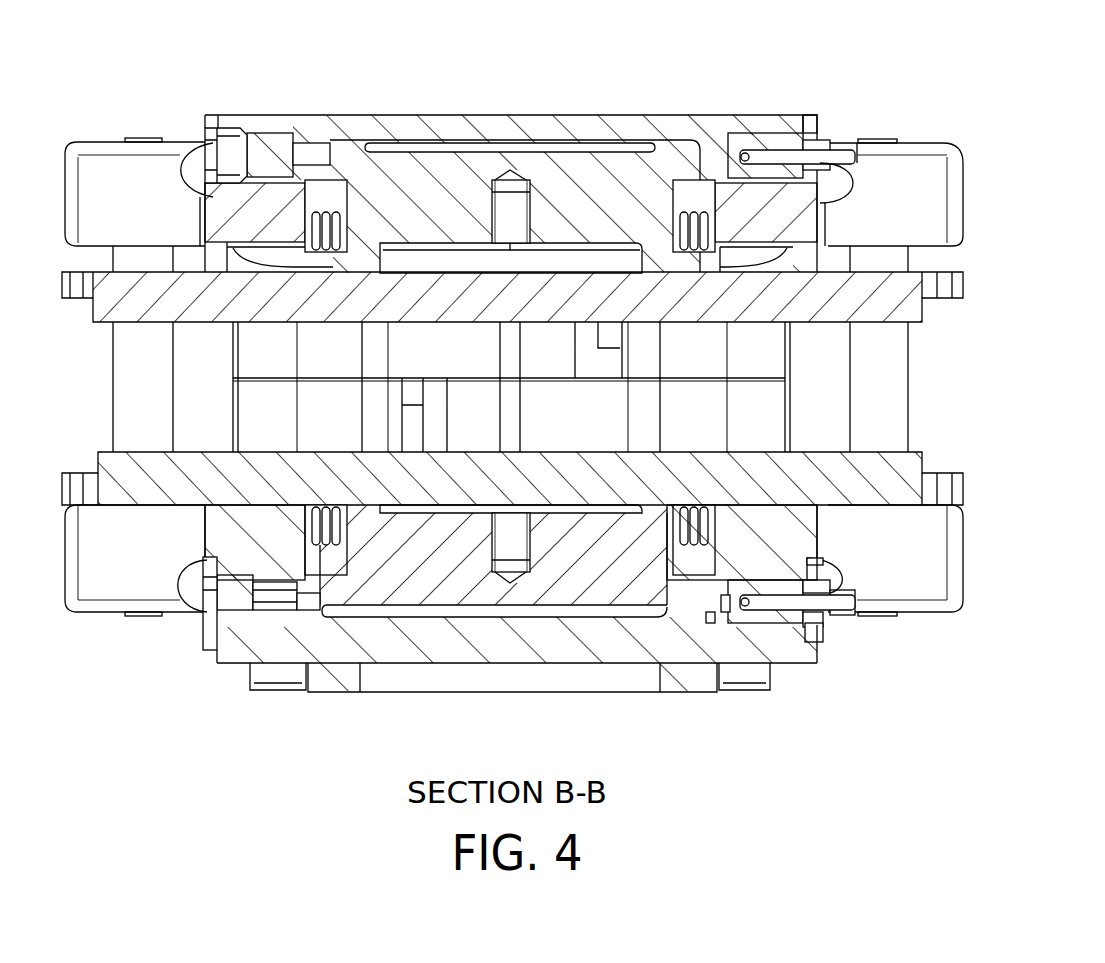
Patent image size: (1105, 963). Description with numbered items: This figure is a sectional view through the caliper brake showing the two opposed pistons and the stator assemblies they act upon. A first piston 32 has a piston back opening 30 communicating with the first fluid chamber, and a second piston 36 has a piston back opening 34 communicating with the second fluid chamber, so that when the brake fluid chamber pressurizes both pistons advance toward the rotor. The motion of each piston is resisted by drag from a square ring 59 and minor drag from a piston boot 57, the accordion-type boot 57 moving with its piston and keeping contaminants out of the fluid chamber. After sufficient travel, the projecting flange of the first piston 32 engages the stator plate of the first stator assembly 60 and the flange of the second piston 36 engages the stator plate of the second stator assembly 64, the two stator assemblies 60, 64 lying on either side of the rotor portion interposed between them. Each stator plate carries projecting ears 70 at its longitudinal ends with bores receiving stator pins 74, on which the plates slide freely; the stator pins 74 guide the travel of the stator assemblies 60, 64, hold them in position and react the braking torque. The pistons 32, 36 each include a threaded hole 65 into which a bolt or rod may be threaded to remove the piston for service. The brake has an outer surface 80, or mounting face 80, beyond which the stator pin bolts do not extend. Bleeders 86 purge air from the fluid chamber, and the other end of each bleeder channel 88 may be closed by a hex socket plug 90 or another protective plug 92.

The piston back opening 30 is at (627, 598).
The first piston 32 is at (377, 595).
The piston back opening 34 is at (560, 148).
The second piston 36 is at (396, 198).
The piston boot 57 is at (348, 212).
The square ring 59 is at (708, 195).
The first stator assembly 60 is at (970, 486).
The second stator assembly 64 is at (970, 281).
The threaded hole 65 is at (512, 545).
The projecting ear 70 is at (898, 300).
The stator pin 74 is at (910, 395).
The outer surface 80 is at (780, 116).
The bleeder 86 is at (843, 610).
The bleeder channel 88 is at (713, 607).
The hex socket plug 90 is at (200, 622).
The protective plug 92 is at (207, 128).